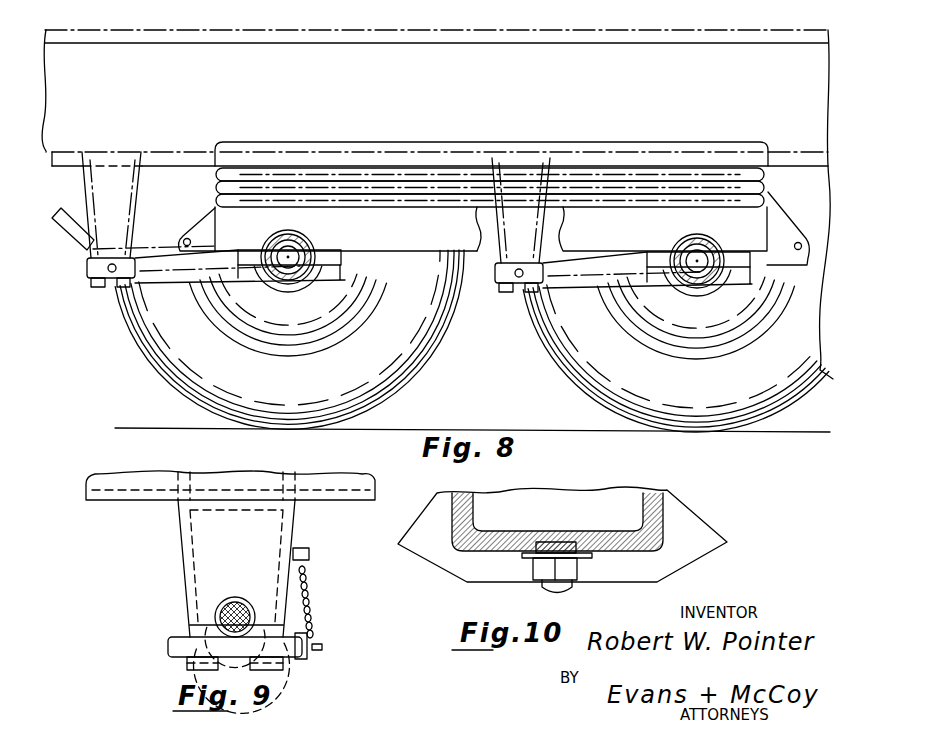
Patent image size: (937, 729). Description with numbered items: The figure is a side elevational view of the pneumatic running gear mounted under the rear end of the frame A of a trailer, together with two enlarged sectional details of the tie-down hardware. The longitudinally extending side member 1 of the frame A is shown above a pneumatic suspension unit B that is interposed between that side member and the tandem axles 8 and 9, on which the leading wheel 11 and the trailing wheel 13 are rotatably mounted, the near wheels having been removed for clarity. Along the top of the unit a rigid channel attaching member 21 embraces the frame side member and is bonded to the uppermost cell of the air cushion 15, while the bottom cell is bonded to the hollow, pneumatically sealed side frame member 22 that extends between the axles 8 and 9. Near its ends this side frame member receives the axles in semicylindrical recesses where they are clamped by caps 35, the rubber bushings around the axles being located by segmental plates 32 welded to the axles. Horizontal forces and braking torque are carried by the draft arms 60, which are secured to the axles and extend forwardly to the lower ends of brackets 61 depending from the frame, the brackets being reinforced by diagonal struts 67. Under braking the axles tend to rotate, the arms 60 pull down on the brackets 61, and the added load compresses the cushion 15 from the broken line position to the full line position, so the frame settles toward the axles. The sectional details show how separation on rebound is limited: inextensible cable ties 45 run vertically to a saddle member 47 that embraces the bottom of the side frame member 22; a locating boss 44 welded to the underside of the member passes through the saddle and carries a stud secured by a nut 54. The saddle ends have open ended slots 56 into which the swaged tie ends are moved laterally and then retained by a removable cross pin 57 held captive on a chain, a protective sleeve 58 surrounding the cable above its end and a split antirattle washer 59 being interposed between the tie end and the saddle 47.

In FIG. 8, the side member 1 is at (435, 72).
In FIG. 8, the frame A is at (166, 91).
In FIG. 8, the pneumatic suspension unit B is at (491, 149).
In FIG. 8, the attaching member 21 is at (455, 150).
In FIG. 8, the air cushion 15 is at (636, 178).
In FIG. 8, the side frame member 22 is at (638, 233).
In FIG. 9, the side frame member 22 is at (347, 502).
In FIG. 10, the side frame member 22 is at (505, 533).
In FIG. 8, the bracket 61 is at (130, 202).
In FIG. 8, the diagonal strut 67 is at (72, 212).
In FIG. 8, the arm 60 is at (165, 283).
In FIG. 8, the axle 8 is at (302, 278).
In FIG. 8, the axle 9 is at (710, 273).
In FIG. 8, the segmental plate 32 is at (300, 243).
In FIG. 8, the cap 35 is at (283, 293).
In FIG. 8, the wheel 11 is at (455, 345).
In FIG. 8, the wheel 13 is at (565, 382).
In FIG. 9, the saddle member 47 is at (178, 542).
In FIG. 10, the saddle member 47 is at (702, 547).
In FIG. 9, the split metal washer 59 is at (218, 592).
In FIG. 9, the protective sleeve 58 is at (249, 594).
In FIG. 9, the flexible inextensible element 45 is at (216, 612).
In FIG. 9, the open ended slot 56 is at (225, 662).
In FIG. 9, the cross pin 57 is at (298, 660).
In FIG. 10, the boss 44 is at (572, 535).
In FIG. 10, the nut 54 is at (580, 578).